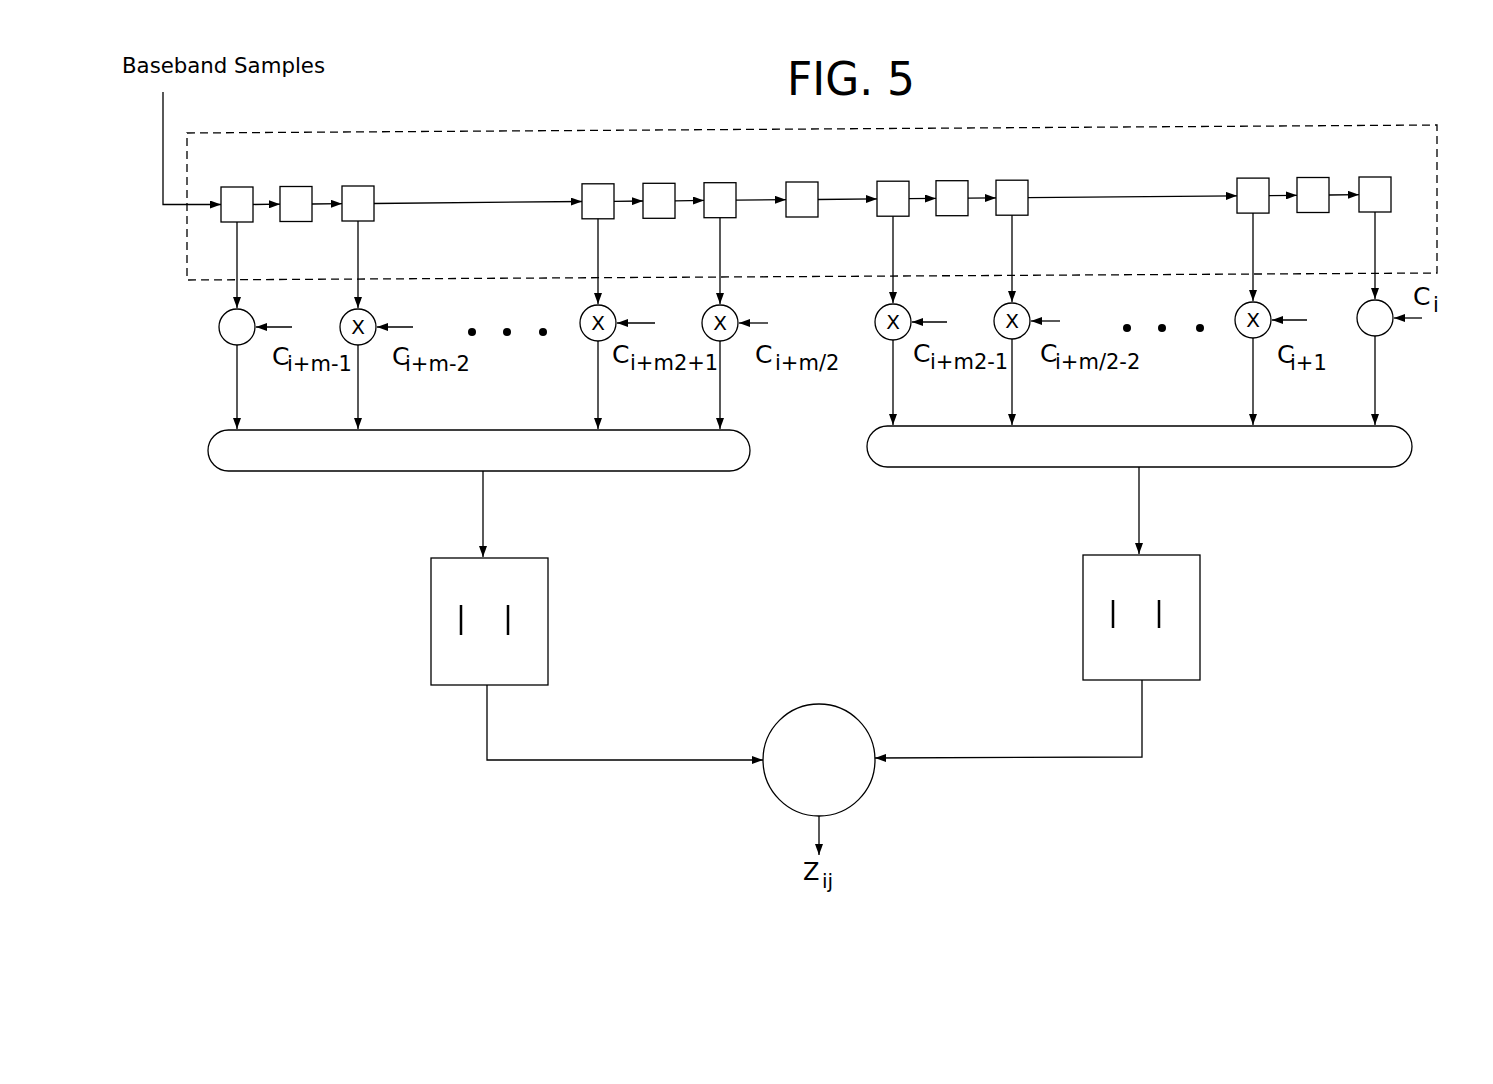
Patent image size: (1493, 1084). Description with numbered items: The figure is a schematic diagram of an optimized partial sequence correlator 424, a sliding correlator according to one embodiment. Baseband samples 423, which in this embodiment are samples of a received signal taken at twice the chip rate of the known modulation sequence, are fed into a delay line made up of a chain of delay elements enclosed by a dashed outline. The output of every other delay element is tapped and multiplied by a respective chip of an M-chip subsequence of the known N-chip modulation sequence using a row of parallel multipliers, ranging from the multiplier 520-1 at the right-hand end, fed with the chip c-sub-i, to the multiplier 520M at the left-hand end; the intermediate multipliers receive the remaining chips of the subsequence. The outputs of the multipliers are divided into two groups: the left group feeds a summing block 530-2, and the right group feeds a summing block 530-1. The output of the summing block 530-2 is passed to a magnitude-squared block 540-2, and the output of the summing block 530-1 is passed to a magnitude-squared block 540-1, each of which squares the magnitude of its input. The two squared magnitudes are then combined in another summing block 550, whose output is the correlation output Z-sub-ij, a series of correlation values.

The baseband samples 423 is at (163, 103).
The partial sequence correlator 424 is at (1196, 110).
The multiplier 520M is at (222, 315).
The multiplier 520-1 is at (1382, 333).
The summing block 530-2 is at (215, 470).
The summing block 530-1 is at (1380, 466).
The magnitude-squared block 540-2 is at (549, 598).
The magnitude-squared block 540-1 is at (1201, 642).
The summing block 550 is at (852, 712).